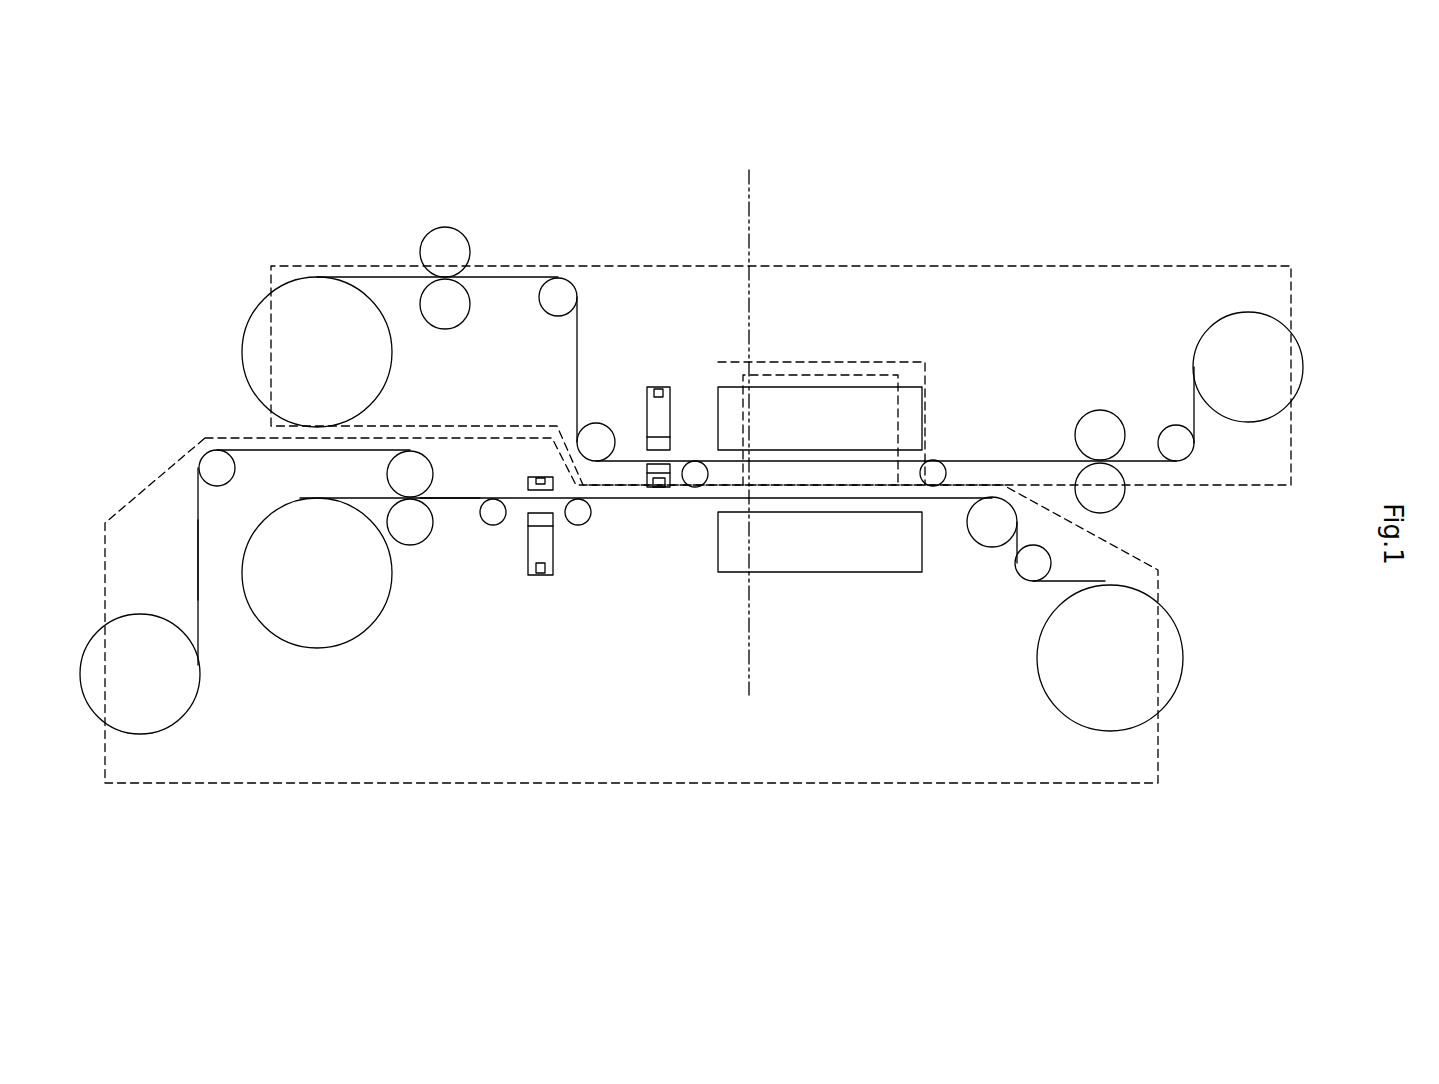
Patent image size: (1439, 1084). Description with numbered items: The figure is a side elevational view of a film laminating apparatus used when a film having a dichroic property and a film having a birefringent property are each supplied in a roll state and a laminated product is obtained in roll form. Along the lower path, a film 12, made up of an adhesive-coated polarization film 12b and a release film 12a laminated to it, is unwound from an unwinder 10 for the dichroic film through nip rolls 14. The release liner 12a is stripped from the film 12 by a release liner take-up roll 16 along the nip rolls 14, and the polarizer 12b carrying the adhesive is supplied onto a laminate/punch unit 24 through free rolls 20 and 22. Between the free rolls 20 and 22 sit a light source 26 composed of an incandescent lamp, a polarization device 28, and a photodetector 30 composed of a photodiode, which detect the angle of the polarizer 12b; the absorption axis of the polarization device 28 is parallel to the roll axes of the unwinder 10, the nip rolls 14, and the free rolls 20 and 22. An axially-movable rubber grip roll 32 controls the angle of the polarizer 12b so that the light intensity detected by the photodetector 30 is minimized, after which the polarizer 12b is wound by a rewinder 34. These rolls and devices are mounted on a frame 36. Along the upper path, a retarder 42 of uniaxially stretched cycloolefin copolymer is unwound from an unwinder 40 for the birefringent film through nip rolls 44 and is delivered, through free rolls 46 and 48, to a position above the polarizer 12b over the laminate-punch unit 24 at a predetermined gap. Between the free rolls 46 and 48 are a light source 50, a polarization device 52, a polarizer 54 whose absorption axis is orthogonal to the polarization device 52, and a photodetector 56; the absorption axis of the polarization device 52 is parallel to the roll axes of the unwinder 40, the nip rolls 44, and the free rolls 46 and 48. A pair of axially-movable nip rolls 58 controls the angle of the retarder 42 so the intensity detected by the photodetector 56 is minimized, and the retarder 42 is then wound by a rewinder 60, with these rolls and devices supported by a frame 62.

The unwinder 10 is at (330, 648).
The film 12 is at (352, 489).
The release film 12a is at (200, 630).
The polarization film 12b is at (462, 502).
The nip rolls 14 is at (432, 478).
The release liner take-up roll 16 is at (180, 712).
The free roll 20 is at (495, 522).
The free roll 22 is at (585, 521).
The laminate/punch unit 24 is at (795, 572).
The light source 26 is at (540, 574).
The polarization device 28 is at (545, 533).
The photodetector 30 is at (538, 476).
The rubber grip roll 32 is at (985, 530).
The rewinder 34 is at (1055, 690).
The frame 36 is at (565, 783).
The unwinder 40 is at (316, 280).
The retarder 42 is at (518, 276).
The nip rolls 44 is at (445, 236).
The free roll 46 is at (596, 431).
The free roll 48 is at (692, 466).
The light source 50 is at (658, 390).
The polarization device 52 is at (651, 430).
The polarizer 54 is at (660, 489).
The photodetector 56 is at (668, 486).
The nip rolls 58 is at (1101, 420).
The rewinder 60 is at (1210, 345).
The frame 62 is at (697, 265).